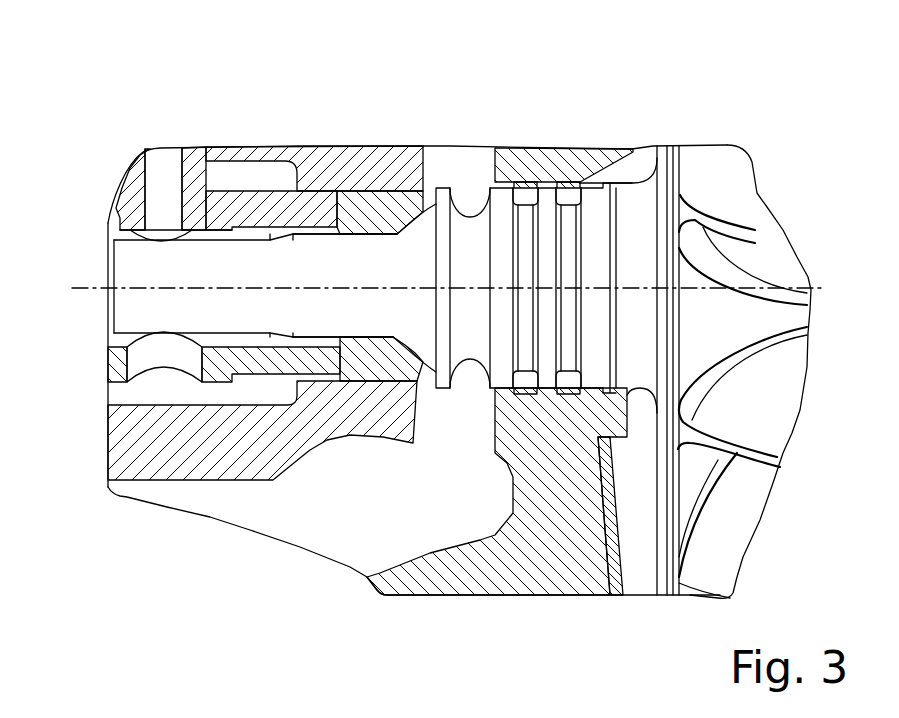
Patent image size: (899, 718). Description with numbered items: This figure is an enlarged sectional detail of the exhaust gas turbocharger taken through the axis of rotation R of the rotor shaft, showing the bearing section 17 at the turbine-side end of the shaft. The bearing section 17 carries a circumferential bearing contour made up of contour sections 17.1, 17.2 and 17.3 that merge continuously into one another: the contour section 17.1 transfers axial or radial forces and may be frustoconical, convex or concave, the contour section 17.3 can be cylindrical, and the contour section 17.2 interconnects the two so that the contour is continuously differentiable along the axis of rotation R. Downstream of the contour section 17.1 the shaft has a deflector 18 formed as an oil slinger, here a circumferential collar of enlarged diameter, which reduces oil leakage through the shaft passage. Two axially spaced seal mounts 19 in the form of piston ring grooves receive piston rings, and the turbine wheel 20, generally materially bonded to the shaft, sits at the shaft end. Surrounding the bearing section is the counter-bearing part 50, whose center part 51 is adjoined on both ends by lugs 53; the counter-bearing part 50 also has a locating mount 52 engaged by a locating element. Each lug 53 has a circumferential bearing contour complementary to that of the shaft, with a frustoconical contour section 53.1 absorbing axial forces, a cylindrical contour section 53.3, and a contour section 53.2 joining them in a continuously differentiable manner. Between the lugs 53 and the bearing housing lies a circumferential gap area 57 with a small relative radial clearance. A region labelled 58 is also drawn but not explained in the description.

The bearing section 17 is at (365, 253).
The contour section 17.1 is at (400, 234).
The contour section 17.2 is at (380, 262).
The contour section 17.3 is at (350, 221).
The deflector 18 is at (440, 188).
The seal mount 19 is at (567, 200).
The turbine wheel 20 is at (740, 163).
The counter-bearing part 50 is at (252, 194).
The center part 51 is at (213, 148).
The locating mount 52 is at (185, 148).
The lug 53 is at (392, 221).
The contour section 53.1 is at (400, 343).
The contour section 53.2 is at (375, 342).
The contour section 53.3 is at (340, 383).
The gap area 57 is at (353, 180).
The cavity 58 is at (430, 378).
The axis of rotation R is at (108, 293).